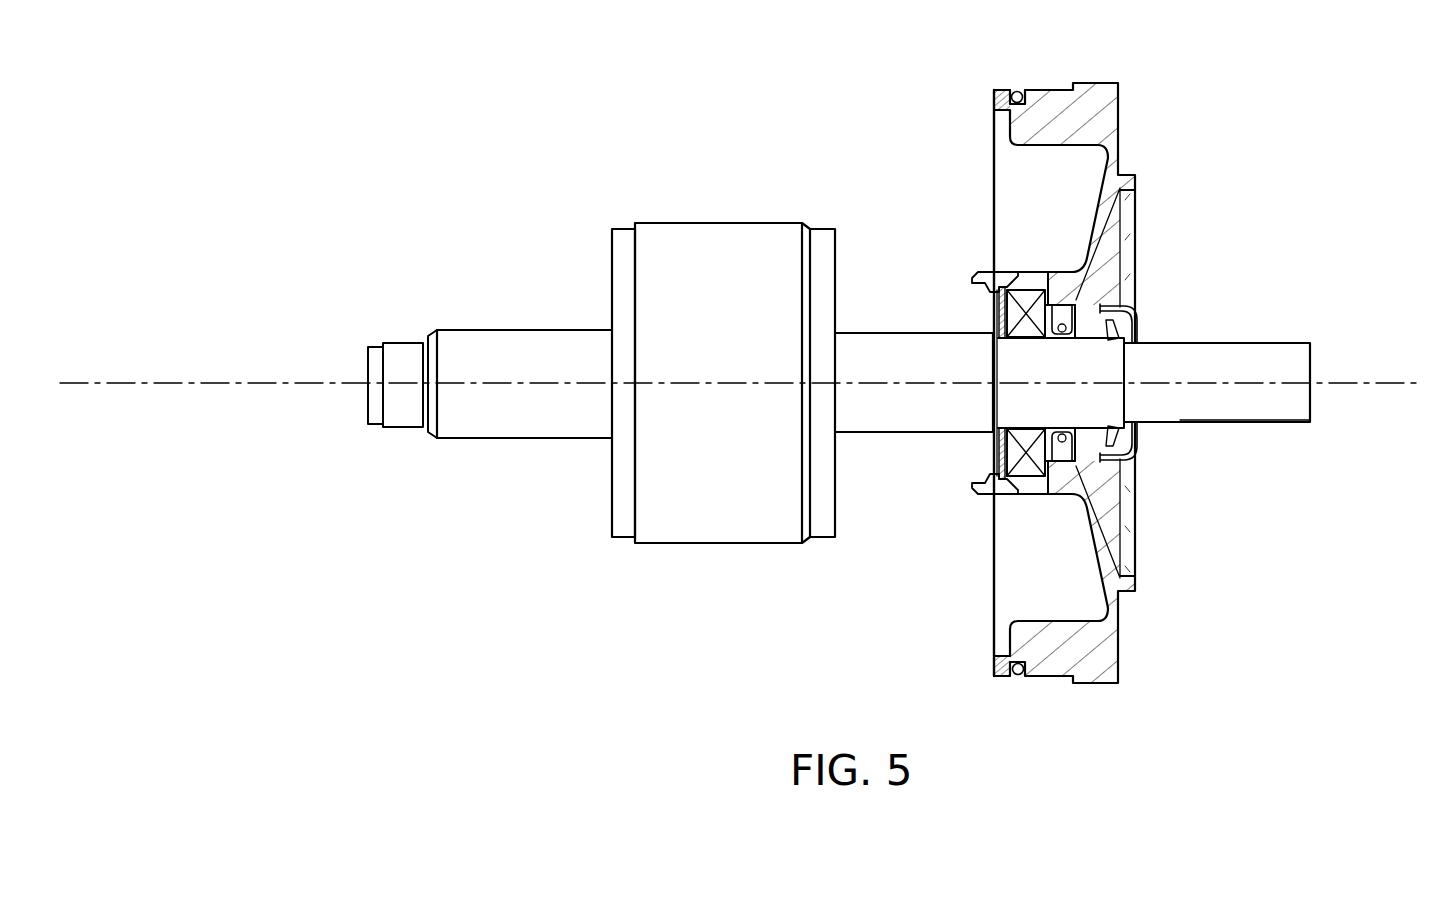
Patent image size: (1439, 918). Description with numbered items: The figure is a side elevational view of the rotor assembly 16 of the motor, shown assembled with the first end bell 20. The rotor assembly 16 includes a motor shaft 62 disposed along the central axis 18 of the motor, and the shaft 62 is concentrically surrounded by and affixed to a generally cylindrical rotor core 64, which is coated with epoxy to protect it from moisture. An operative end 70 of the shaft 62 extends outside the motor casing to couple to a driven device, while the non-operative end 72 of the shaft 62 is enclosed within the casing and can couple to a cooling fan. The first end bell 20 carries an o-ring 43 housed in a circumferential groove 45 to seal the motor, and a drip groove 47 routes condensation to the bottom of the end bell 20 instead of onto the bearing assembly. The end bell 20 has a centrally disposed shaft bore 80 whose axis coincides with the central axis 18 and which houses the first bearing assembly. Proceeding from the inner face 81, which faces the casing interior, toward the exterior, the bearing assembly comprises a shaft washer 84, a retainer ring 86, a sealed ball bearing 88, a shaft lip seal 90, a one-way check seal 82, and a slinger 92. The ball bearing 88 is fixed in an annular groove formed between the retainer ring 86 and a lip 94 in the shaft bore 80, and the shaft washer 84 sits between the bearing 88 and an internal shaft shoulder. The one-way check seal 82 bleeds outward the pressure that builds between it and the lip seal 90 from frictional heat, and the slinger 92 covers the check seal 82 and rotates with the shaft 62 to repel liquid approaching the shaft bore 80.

The rotor assembly 16 is at (861, 322).
The central axis 18 is at (1365, 375).
The first end bell 20 is at (1089, 92).
The o-ring 43 is at (1020, 85).
The circumferential groove 45 is at (1030, 96).
The drip groove 47 is at (975, 270).
The motor shaft 62 is at (1265, 345).
The rotor core 64 is at (763, 528).
The operative end 70 is at (1300, 394).
The non-operative end 72 is at (366, 415).
The shaft bore 80 is at (935, 360).
The inner face 81 is at (950, 405).
The one-way check seal 82 is at (1145, 445).
The shaft washer 84 is at (996, 330).
The retainer ring 86 is at (985, 475).
The sealed ball bearing 88 is at (996, 443).
The shaft lip seal 90 is at (1073, 305).
The slinger 92 is at (1112, 434).
The lip 94 is at (1058, 466).